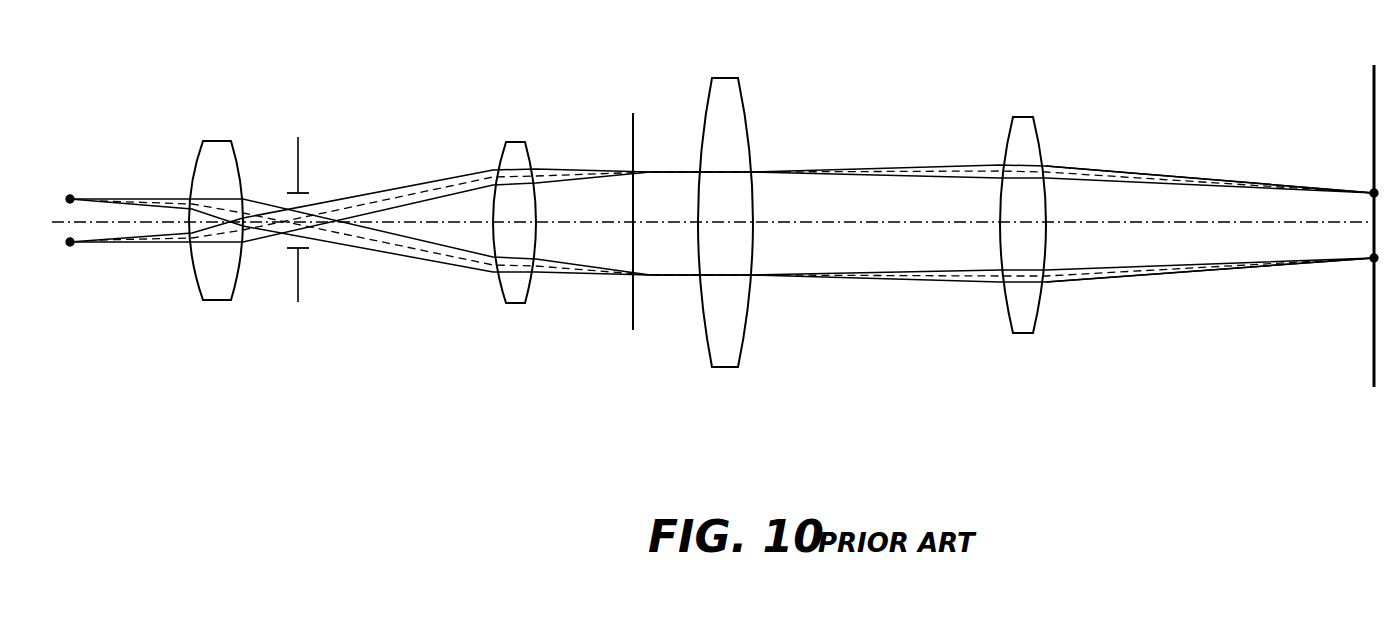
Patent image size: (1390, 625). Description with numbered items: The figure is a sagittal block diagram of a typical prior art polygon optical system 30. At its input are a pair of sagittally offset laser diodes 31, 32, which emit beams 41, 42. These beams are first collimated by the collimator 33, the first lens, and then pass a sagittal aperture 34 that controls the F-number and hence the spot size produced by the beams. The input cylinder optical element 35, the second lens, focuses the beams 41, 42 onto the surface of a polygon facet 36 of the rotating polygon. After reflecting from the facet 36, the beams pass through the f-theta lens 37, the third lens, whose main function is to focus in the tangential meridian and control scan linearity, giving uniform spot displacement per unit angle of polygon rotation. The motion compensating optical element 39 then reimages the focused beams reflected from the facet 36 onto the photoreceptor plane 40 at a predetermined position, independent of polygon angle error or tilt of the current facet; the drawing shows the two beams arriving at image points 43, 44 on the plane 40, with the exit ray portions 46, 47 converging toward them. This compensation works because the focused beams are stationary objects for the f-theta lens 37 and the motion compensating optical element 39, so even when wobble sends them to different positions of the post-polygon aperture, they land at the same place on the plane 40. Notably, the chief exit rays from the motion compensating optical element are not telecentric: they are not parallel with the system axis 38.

The prior art optical system 30 is at (368, 46).
The laser diode 31 is at (70, 196).
The laser diode 32 is at (70, 245).
The collimator 33 is at (223, 292).
The sagittal aperture 34 is at (300, 155).
The input cylinder optical element 35 is at (518, 295).
The polygon facet 36 is at (635, 133).
The f-theta lens 37 is at (748, 118).
The system axis 38 is at (842, 225).
The motion compensating optical element 39 is at (1007, 308).
The photoreceptor plane 40 is at (1372, 103).
The beam 41 is at (457, 254).
The beam 42 is at (457, 189).
The first image point 43 is at (1373, 191).
The second image point 44 is at (1373, 260).
The upper focused beam 46 is at (1068, 169).
The lower focused beam 47 is at (1068, 286).